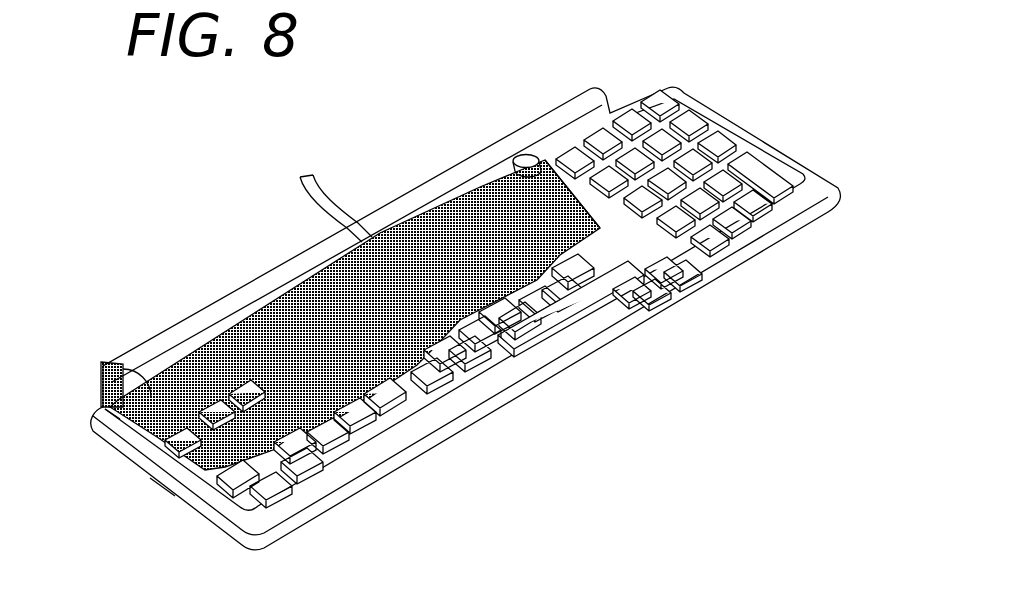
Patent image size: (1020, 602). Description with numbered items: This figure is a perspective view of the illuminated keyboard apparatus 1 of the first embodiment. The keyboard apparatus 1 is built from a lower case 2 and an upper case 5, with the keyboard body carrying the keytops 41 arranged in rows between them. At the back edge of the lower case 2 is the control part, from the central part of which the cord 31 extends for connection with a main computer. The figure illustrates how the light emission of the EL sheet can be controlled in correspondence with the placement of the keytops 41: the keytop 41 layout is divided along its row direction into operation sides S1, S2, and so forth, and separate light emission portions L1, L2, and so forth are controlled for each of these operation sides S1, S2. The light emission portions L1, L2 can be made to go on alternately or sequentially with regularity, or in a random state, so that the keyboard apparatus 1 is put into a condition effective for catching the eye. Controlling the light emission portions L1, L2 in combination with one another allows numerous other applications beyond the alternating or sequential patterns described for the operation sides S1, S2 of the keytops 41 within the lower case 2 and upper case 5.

The keyboard apparatus 1 is at (476, 436).
The lower case 2 is at (190, 508).
The upper case 5 is at (262, 543).
The cord 31 is at (332, 215).
The keytop 41 is at (586, 323).
The light emission portion L1 is at (550, 170).
The light emission portion L2 is at (690, 272).
The operation side S1 is at (118, 435).
The operation side S2 is at (160, 485).